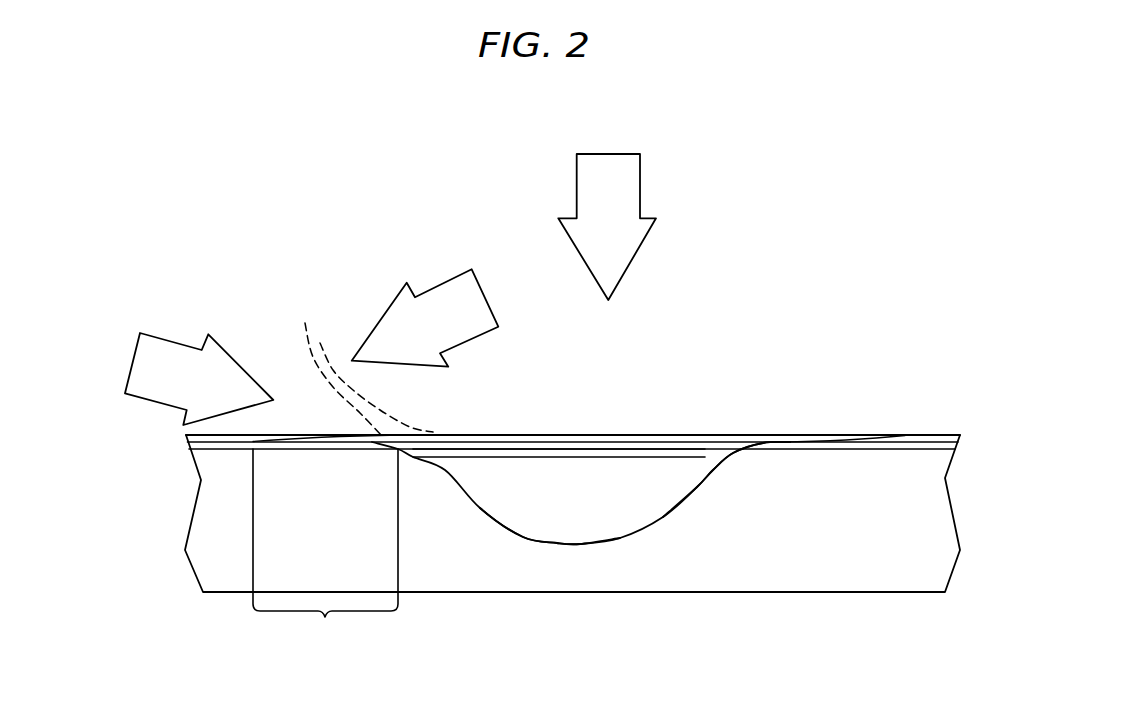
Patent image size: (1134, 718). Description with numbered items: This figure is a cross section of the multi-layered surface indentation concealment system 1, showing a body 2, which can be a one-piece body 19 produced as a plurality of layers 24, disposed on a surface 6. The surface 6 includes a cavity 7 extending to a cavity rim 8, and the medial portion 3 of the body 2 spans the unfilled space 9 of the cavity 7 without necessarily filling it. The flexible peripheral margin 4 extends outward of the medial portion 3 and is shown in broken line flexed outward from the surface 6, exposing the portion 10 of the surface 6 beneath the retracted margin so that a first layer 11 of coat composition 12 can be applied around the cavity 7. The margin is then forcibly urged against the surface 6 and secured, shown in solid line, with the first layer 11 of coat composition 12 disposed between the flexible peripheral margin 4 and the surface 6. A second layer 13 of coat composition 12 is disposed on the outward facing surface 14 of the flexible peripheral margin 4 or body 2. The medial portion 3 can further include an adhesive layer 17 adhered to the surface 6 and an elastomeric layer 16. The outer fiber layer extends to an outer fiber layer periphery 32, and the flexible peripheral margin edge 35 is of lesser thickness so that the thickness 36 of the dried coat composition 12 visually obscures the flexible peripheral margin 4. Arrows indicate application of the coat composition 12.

The multi-layered surface indentation concealment system 1 is at (851, 306).
The body 2 is at (573, 403).
The one-piece body 19 is at (727, 430).
The medial portion 3 is at (573, 400).
The plurality of layers 24 is at (587, 436).
The flexible peripheral margin 4 is at (376, 325).
The outward facing surface 14 is at (323, 342).
The surface 6 is at (927, 450).
The cavity 7 is at (523, 537).
The cavity rim 8 is at (737, 453).
The unfilled space 9 is at (585, 504).
The portion of the surface 10 is at (325, 547).
The first layer 11 is at (511, 464).
The coat composition 12 is at (390, 289).
The second layer 13 is at (189, 441).
The elastomeric layer 16 is at (633, 445).
The adhesive layer 17 is at (675, 452).
The outer fiber layer periphery 32 is at (905, 440).
The flexible peripheral margin edge 35 is at (305, 322).
The thickness 36 is at (190, 443).